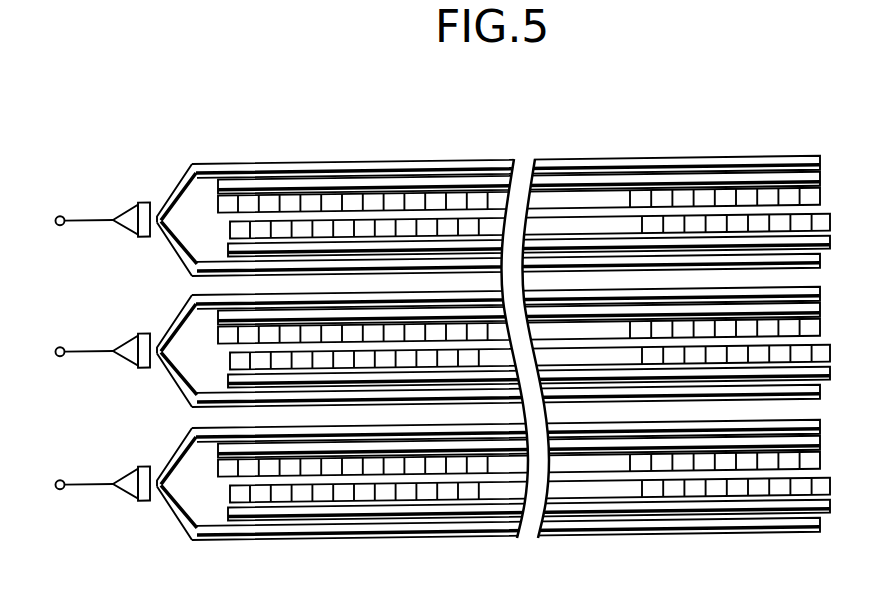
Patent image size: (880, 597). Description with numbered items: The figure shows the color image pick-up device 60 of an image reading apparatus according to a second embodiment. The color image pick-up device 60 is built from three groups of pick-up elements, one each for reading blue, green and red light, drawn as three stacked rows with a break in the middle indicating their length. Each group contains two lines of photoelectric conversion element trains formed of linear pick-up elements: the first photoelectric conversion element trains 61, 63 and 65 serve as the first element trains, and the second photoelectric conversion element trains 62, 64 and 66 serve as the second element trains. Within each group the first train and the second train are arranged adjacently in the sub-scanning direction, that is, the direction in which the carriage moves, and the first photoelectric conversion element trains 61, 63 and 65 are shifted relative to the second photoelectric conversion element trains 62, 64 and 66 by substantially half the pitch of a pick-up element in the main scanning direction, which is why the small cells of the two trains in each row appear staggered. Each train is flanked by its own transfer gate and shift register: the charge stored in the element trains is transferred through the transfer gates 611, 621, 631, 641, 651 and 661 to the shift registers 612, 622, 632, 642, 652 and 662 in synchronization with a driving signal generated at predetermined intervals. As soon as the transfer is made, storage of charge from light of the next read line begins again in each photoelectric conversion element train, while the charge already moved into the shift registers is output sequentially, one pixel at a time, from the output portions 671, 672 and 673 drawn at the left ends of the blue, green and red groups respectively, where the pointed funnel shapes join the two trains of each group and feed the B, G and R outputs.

The color image pick-up device 60 is at (172, 146).
The first photoelectric conversion element train 61 is at (220, 204).
The second photoelectric conversion element train 62 is at (232, 234).
The first photoelectric conversion element train 63 is at (220, 335).
The second photoelectric conversion element train 64 is at (232, 365).
The first photoelectric conversion element train 65 is at (220, 468).
The second photoelectric conversion element train 66 is at (232, 498).
The transfer gate 611 is at (243, 188).
The shift register 612 is at (315, 167).
The transfer gate 621 is at (623, 243).
The shift register 622 is at (703, 262).
The transfer gate 631 is at (400, 322).
The shift register 632 is at (466, 292).
The transfer gate 641 is at (645, 375).
The shift register 642 is at (585, 393).
The transfer gate 651 is at (338, 447).
The shift register 652 is at (413, 428).
The transfer gate 661 is at (730, 507).
The shift register 662 is at (787, 523).
The output portion 671 is at (127, 210).
The output portion 672 is at (127, 341).
The output portion 673 is at (127, 475).